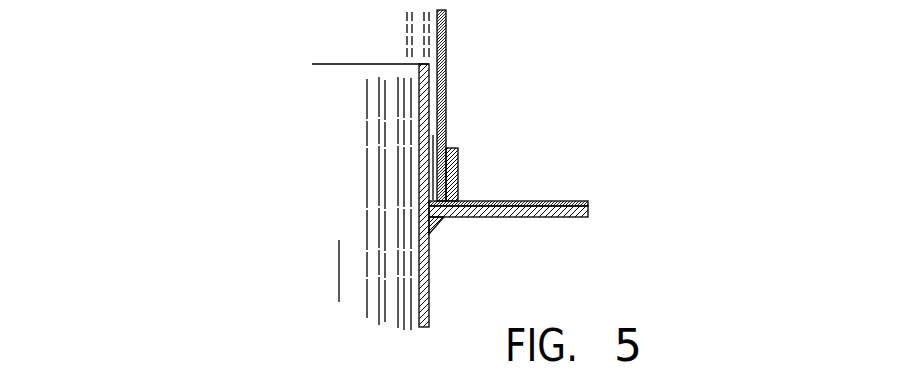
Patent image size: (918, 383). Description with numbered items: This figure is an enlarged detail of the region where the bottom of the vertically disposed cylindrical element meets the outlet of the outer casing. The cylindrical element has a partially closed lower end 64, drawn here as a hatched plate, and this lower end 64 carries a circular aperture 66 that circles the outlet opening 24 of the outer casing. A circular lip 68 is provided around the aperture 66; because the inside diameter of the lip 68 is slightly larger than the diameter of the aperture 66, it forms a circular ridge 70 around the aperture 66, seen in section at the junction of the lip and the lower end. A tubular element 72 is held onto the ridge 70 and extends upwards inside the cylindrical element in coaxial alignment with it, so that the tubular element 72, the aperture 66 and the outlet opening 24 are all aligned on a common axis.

The outlet opening 24 is at (376, 64).
The partially closed lower end 64 is at (545, 200).
The circular aperture 66 is at (430, 148).
The circular lip 68 is at (458, 162).
The circular ridge 70 is at (442, 220).
The tubular element 72 is at (446, 42).